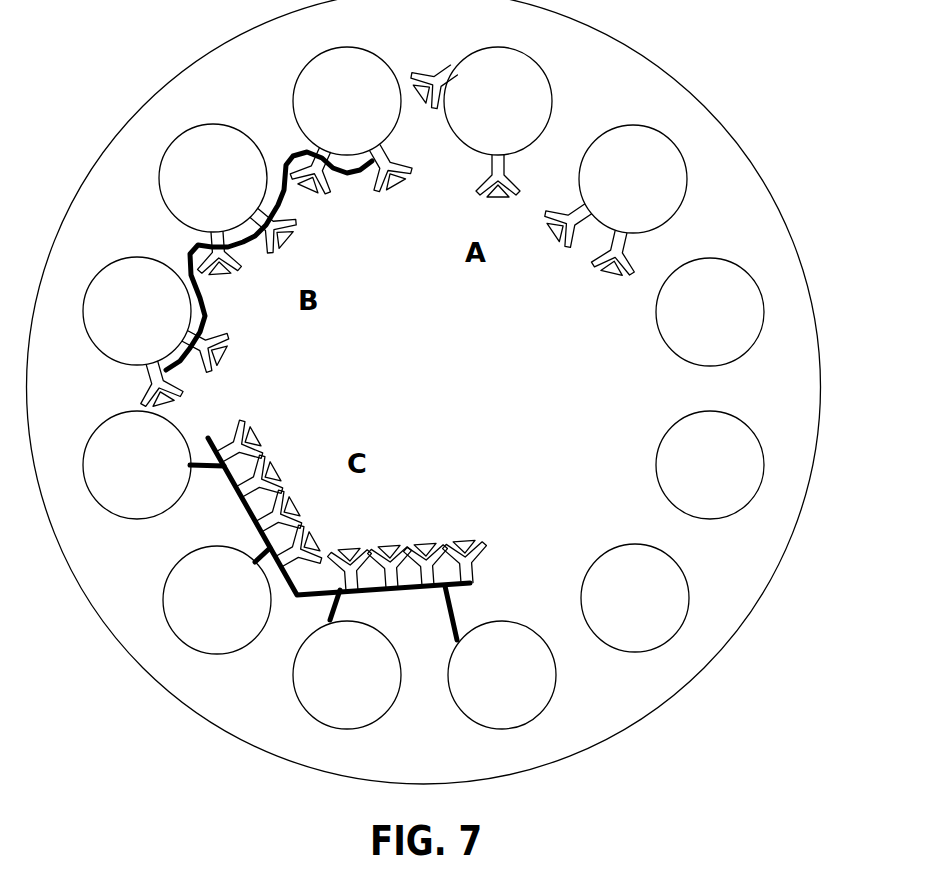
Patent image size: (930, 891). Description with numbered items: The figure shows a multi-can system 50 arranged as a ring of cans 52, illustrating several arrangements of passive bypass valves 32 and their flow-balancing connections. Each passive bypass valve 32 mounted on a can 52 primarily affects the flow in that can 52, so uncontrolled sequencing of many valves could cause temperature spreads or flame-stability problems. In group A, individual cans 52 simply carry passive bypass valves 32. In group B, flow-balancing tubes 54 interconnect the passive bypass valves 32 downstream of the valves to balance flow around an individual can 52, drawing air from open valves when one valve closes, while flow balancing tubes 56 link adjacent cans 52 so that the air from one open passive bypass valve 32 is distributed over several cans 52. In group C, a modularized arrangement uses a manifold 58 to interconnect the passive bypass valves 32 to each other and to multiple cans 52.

The multi-can system 50 is at (82, 90).
The can 52 is at (688, 192).
The passive bypass valve 32 is at (432, 157).
The flow-balancing tube 54 is at (355, 177).
The flow balancing tube 56 is at (285, 157).
The manifold 58 is at (235, 497).